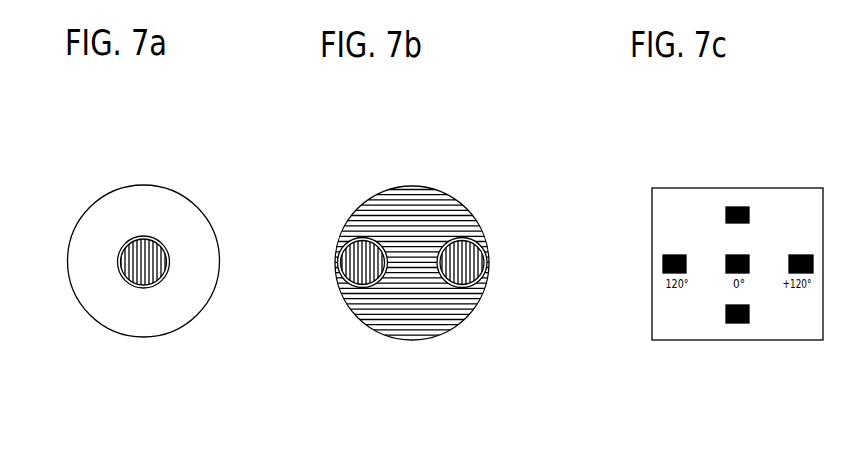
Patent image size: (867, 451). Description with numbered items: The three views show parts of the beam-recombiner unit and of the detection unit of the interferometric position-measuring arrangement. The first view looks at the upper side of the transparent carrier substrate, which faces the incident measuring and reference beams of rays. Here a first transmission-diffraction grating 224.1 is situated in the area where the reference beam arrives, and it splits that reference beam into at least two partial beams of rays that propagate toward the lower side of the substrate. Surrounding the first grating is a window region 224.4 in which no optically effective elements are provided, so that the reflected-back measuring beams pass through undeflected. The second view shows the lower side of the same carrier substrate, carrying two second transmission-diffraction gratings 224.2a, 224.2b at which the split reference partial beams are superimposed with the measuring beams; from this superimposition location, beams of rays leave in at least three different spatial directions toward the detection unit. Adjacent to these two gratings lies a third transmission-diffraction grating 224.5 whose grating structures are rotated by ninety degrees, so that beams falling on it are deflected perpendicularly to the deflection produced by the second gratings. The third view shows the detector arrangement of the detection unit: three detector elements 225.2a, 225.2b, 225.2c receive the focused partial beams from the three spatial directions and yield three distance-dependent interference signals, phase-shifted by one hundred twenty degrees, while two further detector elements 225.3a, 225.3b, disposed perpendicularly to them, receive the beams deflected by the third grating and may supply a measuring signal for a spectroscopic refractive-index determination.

In FIG. 7a, the first transmission-diffraction grating 224.1 is at (140, 242).
In FIG. 7a, the window region 224.4 is at (197, 232).
In FIG. 7b, the second transmission-diffraction grating 224.2a is at (362, 275).
In FIG. 7b, the second transmission-diffraction grating 224.2b is at (469, 268).
In FIG. 7b, the third transmission-diffraction grating 224.5 is at (423, 315).
In FIG. 7c, the detector element 225.2a is at (672, 255).
In FIG. 7c, the detector element 225.2b is at (735, 255).
In FIG. 7c, the detector element 225.2c is at (792, 255).
In FIG. 7c, the detector element 225.3a is at (737, 207).
In FIG. 7c, the detector element 225.3b is at (727, 323).